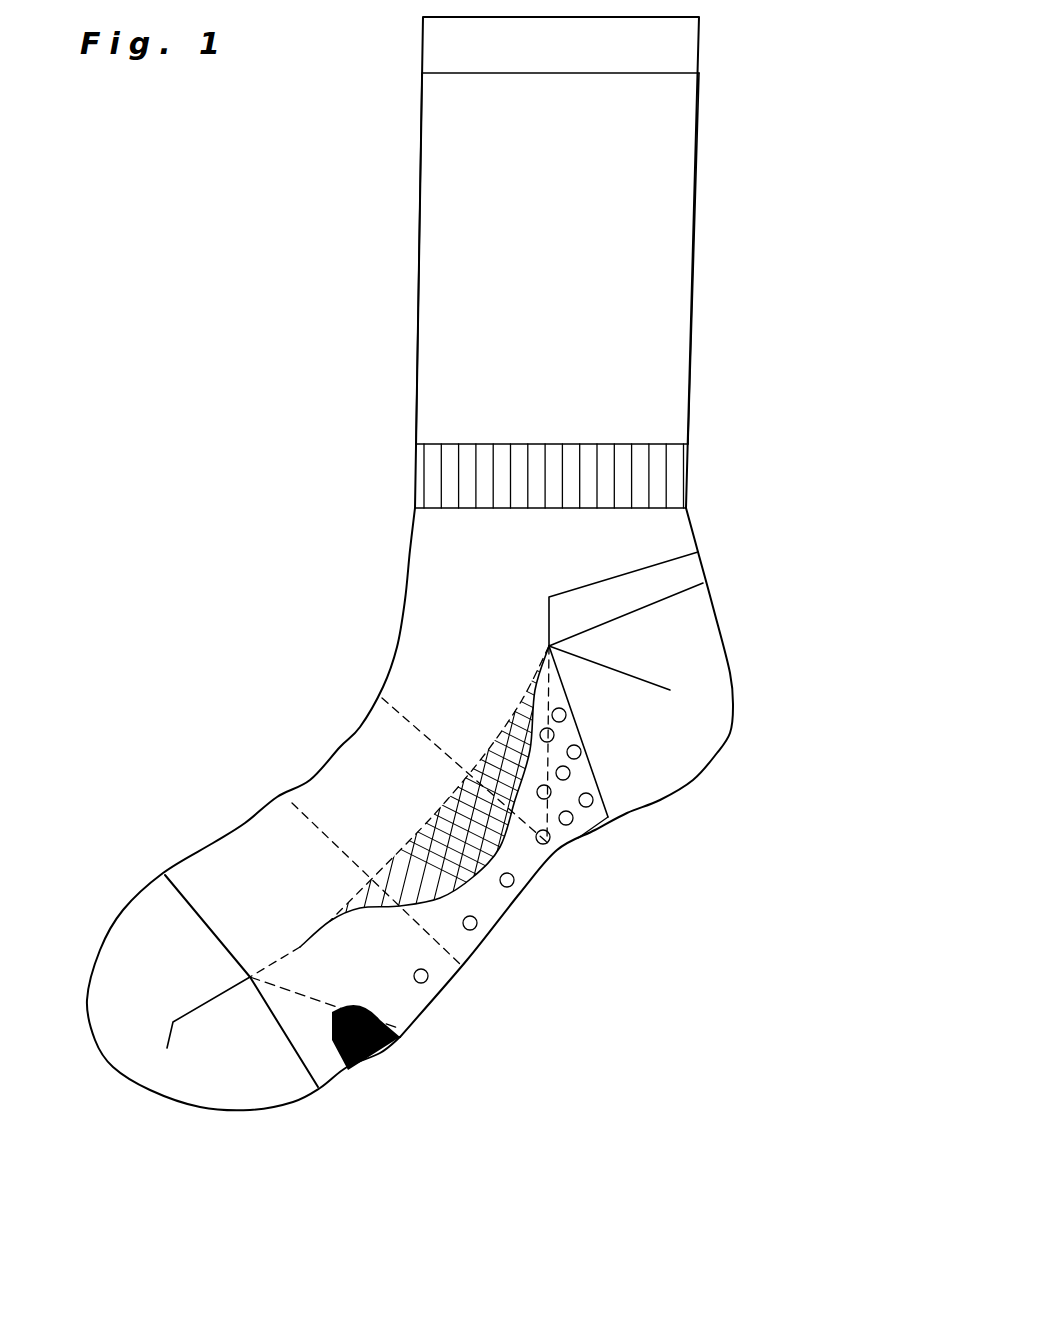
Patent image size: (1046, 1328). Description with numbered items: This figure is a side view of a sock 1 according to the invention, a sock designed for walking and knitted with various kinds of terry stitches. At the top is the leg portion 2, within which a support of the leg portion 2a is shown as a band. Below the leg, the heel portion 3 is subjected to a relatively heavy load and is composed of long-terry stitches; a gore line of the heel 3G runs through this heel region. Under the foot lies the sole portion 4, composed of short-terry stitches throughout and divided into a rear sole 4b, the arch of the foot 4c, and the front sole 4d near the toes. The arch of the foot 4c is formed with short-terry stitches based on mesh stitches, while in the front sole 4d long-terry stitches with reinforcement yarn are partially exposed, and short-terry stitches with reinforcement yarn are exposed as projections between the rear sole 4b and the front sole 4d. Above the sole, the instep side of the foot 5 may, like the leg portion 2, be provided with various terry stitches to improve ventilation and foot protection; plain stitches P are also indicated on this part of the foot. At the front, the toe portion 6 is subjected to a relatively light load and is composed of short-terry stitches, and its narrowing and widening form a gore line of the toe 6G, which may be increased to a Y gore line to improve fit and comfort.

The sock 1 is at (718, 107).
The leg portion 2 is at (627, 328).
The support of the leg portion 2a is at (606, 477).
The heel portion 3 is at (679, 628).
The gore line of the heel 3G is at (670, 690).
The sole portion 4 is at (525, 868).
The rear sole 4b is at (578, 838).
The arch of the foot 4c is at (436, 873).
The front sole 4d is at (398, 1028).
The instep side of the foot 5 is at (252, 843).
The plain stitches P is at (227, 885).
The toe portion 6 is at (228, 1082).
The gore line of the toe 6G is at (147, 1012).